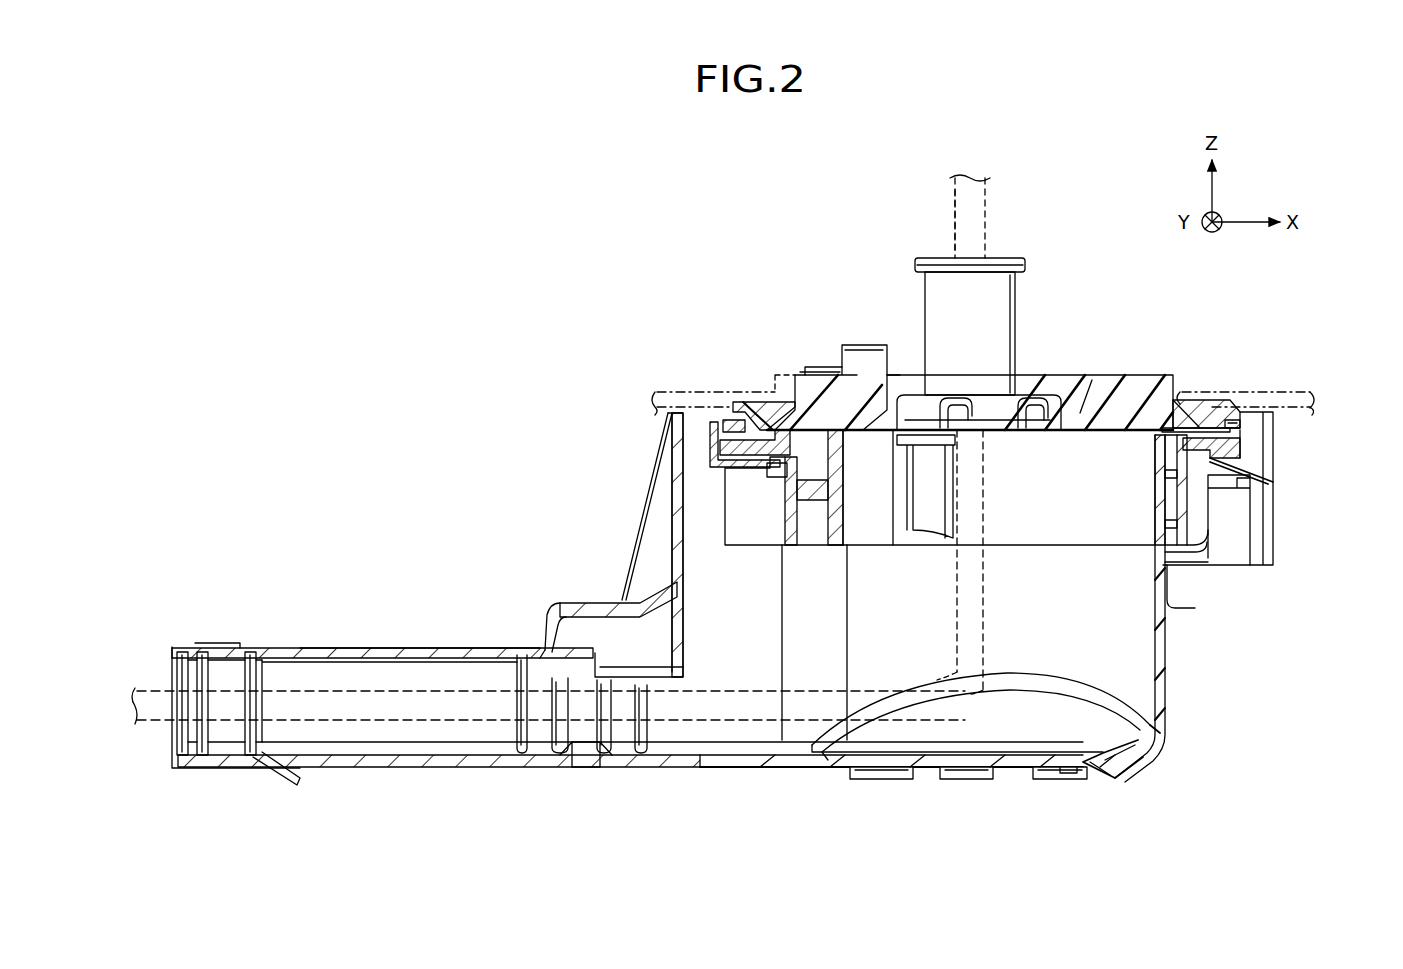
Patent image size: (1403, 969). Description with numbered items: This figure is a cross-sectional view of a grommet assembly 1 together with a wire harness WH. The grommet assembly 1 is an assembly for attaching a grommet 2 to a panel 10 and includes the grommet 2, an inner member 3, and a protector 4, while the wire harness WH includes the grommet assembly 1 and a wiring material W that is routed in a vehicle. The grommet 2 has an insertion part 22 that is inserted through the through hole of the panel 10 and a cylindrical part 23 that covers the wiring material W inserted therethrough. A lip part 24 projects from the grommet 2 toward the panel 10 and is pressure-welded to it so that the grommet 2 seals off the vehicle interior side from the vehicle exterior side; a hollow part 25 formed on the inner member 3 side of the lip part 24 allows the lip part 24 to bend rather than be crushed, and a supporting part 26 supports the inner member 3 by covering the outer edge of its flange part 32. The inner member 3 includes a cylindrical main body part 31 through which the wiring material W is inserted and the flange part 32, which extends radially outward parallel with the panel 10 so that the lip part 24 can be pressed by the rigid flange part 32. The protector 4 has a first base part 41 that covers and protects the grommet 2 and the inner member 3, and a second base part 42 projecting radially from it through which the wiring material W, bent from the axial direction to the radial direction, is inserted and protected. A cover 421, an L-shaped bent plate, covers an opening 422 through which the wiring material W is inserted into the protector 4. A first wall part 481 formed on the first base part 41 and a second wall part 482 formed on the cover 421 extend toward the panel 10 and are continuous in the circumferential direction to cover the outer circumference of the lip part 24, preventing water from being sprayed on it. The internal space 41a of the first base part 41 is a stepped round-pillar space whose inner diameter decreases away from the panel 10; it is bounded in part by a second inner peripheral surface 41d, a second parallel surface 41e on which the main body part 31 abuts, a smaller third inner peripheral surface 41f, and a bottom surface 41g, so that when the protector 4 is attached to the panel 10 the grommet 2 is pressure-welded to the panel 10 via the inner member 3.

The grommet assembly 1 is at (649, 382).
The panel 10 is at (1271, 393).
The grommet 2 is at (1132, 377).
The insertion part 22 is at (820, 386).
The cylindrical part 23 is at (926, 304).
The lip part 24 is at (732, 401).
The hollow part 25 is at (735, 434).
The supporting part 26 is at (715, 454).
The inner member 3 is at (1174, 520).
The main body part 31 is at (1188, 536).
The flange part 32 is at (1218, 468).
The protector 4 is at (1163, 737).
The first base part 41 is at (1165, 706).
The internal space 41a is at (1083, 623).
The second inner peripheral surface 41d is at (1190, 502).
The second parallel surface 41e is at (1185, 558).
The third inner peripheral surface 41f is at (1143, 694).
The bottom surface 41g is at (1032, 752).
The second base part 42 is at (408, 770).
The cover 421 is at (452, 649).
The opening 422 is at (290, 675).
The first wall part 481 is at (1270, 416).
The second wall part 482 is at (666, 414).
The wiring material W is at (953, 215).
The wire harness WH is at (1040, 186).